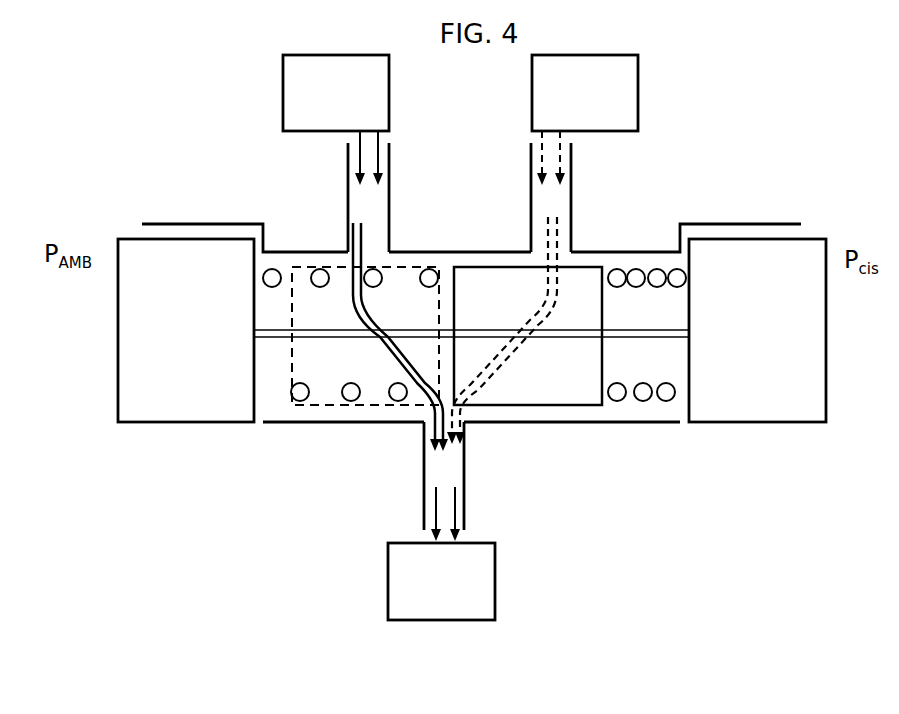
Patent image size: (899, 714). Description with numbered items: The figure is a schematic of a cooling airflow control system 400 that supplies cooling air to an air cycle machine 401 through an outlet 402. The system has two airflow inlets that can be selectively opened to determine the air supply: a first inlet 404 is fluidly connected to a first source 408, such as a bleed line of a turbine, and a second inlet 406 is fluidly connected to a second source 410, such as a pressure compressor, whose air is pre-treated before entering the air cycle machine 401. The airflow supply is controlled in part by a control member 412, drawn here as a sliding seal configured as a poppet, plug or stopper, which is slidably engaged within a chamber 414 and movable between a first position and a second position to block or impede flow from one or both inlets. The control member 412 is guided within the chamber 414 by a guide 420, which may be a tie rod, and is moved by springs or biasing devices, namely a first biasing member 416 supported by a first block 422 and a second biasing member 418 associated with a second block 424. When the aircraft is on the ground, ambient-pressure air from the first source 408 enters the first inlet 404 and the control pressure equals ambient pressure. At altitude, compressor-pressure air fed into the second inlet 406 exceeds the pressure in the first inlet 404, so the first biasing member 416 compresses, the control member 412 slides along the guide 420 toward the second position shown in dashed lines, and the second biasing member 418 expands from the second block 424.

The cooling airflow control system 400 is at (702, 118).
The air cycle machine 401 is at (441, 581).
The outlet 402 is at (465, 488).
The first inlet 404 is at (390, 200).
The second inlet 406 is at (572, 202).
The first source 408 is at (336, 93).
The second source 410 is at (585, 93).
The control member 412 is at (320, 405).
The chamber 414 is at (445, 252).
The first biasing member 416 is at (275, 268).
The second biasing member 418 is at (637, 268).
The guide 420 is at (624, 329).
The first block 422 is at (118, 327).
The second block 424 is at (826, 345).